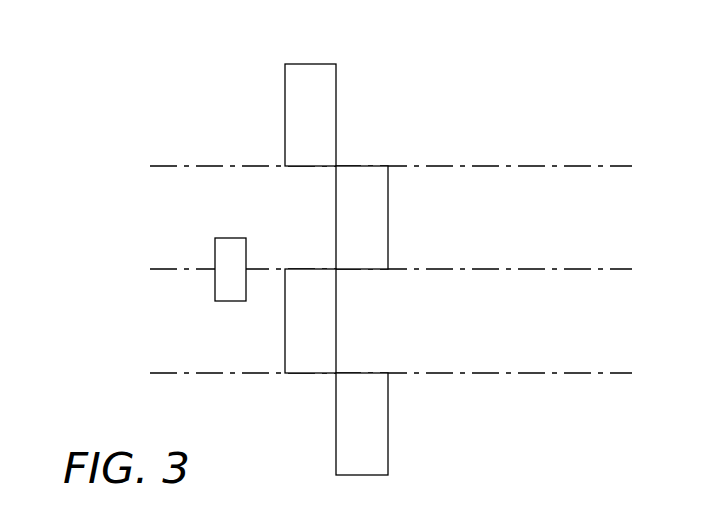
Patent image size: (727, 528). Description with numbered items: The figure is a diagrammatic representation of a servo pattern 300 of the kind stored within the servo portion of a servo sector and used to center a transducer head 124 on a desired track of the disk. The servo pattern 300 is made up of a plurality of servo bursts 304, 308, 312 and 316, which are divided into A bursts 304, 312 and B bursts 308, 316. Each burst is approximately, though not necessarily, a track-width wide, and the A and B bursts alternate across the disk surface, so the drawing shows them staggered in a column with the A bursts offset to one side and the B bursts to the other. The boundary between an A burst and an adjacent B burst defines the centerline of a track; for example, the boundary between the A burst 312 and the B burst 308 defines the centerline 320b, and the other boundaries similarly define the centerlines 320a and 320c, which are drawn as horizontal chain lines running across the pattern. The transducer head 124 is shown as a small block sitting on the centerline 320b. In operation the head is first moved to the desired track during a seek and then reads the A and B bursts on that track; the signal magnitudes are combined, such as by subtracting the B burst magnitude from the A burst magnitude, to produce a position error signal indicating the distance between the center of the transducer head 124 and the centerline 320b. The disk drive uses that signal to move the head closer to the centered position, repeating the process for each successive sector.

The servo pattern 300 is at (402, 132).
The A burst 304 is at (285, 108).
The B burst 308 is at (388, 217).
The A burst 312 is at (285, 340).
The B burst 316 is at (389, 421).
The transducer head 124 is at (231, 238).
The centerline 320a is at (565, 165).
The centerline 320b is at (566, 269).
The centerline 320c is at (570, 373).